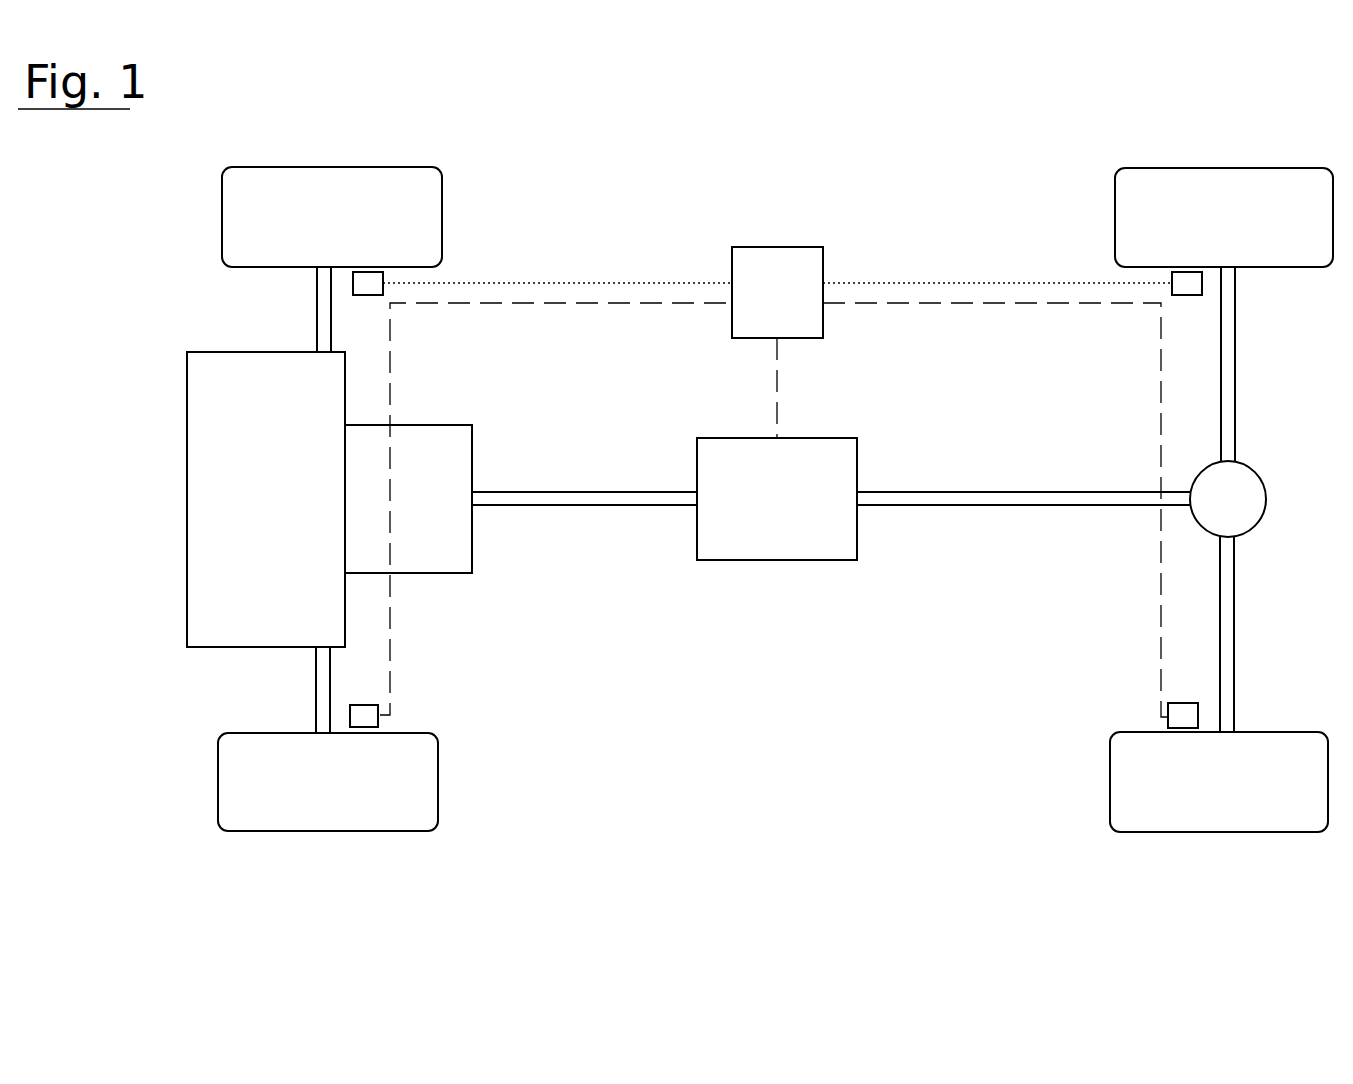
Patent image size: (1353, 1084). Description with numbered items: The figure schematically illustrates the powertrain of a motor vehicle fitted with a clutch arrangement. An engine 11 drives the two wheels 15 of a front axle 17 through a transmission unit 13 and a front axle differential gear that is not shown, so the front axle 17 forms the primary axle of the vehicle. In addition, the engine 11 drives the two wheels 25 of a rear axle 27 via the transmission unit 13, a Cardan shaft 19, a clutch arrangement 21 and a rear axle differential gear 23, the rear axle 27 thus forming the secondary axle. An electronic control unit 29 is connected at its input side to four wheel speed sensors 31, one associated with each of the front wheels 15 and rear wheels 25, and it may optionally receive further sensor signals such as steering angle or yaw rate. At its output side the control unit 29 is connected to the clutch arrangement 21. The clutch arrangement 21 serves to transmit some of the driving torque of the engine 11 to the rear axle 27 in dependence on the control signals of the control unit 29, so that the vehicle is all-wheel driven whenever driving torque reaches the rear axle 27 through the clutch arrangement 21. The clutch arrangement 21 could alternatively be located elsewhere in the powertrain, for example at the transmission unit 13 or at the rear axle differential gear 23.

The engine 11 is at (276, 515).
The transmission unit 13 is at (448, 515).
The wheels 15 is at (330, 190).
The front axle 17 is at (300, 684).
The Cardan shaft 19 is at (586, 506).
The clutch arrangement 21 is at (791, 515).
The rear axle differential gear 23 is at (1240, 492).
The wheels 25 is at (1182, 188).
The rear axle 27 is at (1255, 655).
The electronic control unit 29 is at (797, 310).
The wheel speed sensors 31 is at (366, 283).